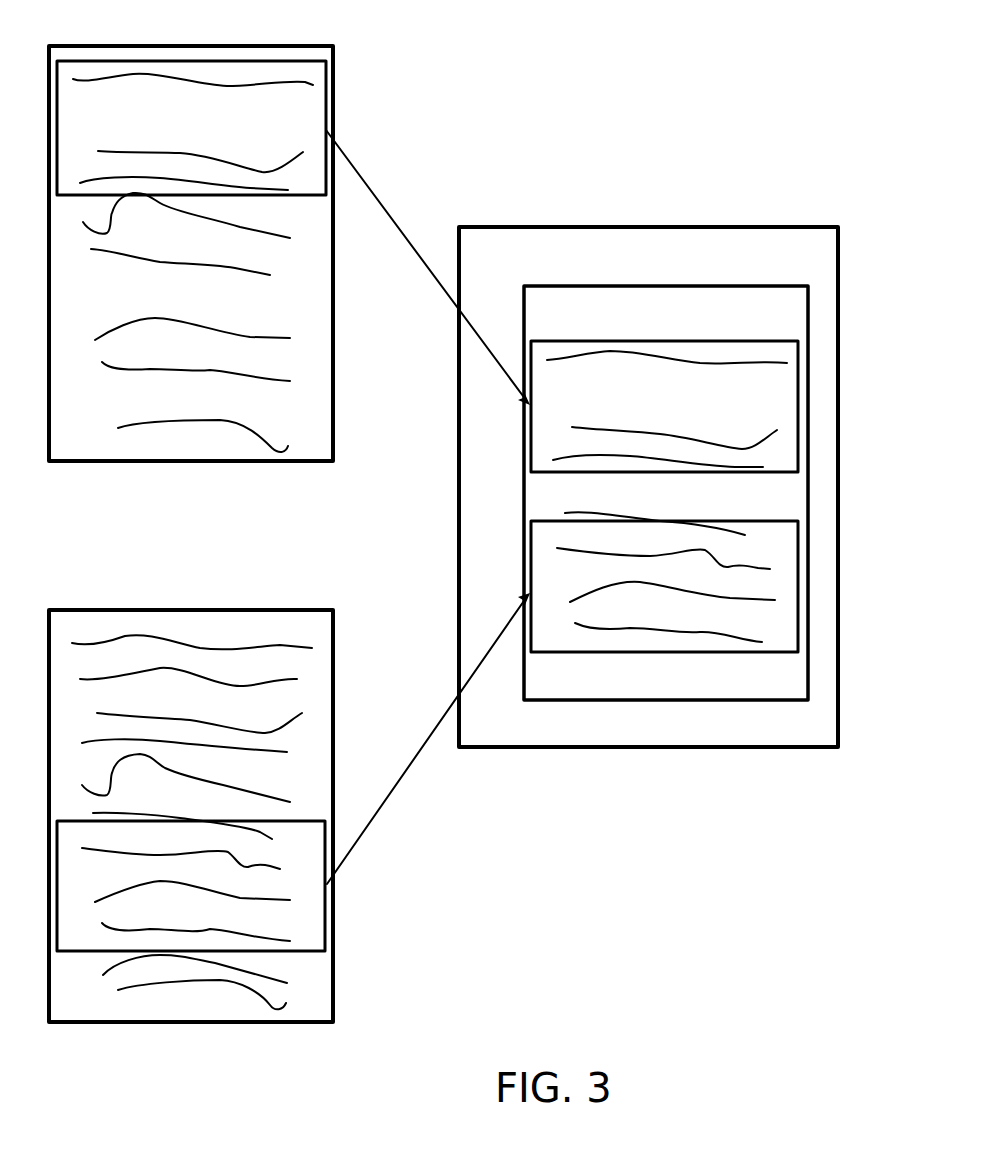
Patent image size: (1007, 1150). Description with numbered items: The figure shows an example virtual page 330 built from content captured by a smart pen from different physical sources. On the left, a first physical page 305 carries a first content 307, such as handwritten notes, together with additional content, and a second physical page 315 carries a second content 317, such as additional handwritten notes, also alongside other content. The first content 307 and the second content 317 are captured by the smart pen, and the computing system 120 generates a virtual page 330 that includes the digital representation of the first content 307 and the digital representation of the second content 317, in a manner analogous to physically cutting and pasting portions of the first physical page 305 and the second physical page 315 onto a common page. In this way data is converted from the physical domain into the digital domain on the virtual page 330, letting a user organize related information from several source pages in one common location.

The computing system 120 is at (650, 229).
The first physical page 305 is at (190, 459).
The first content 307 is at (192, 63).
The second physical page 315 is at (190, 1020).
The second content 317 is at (190, 951).
The virtual page 330 is at (665, 699).